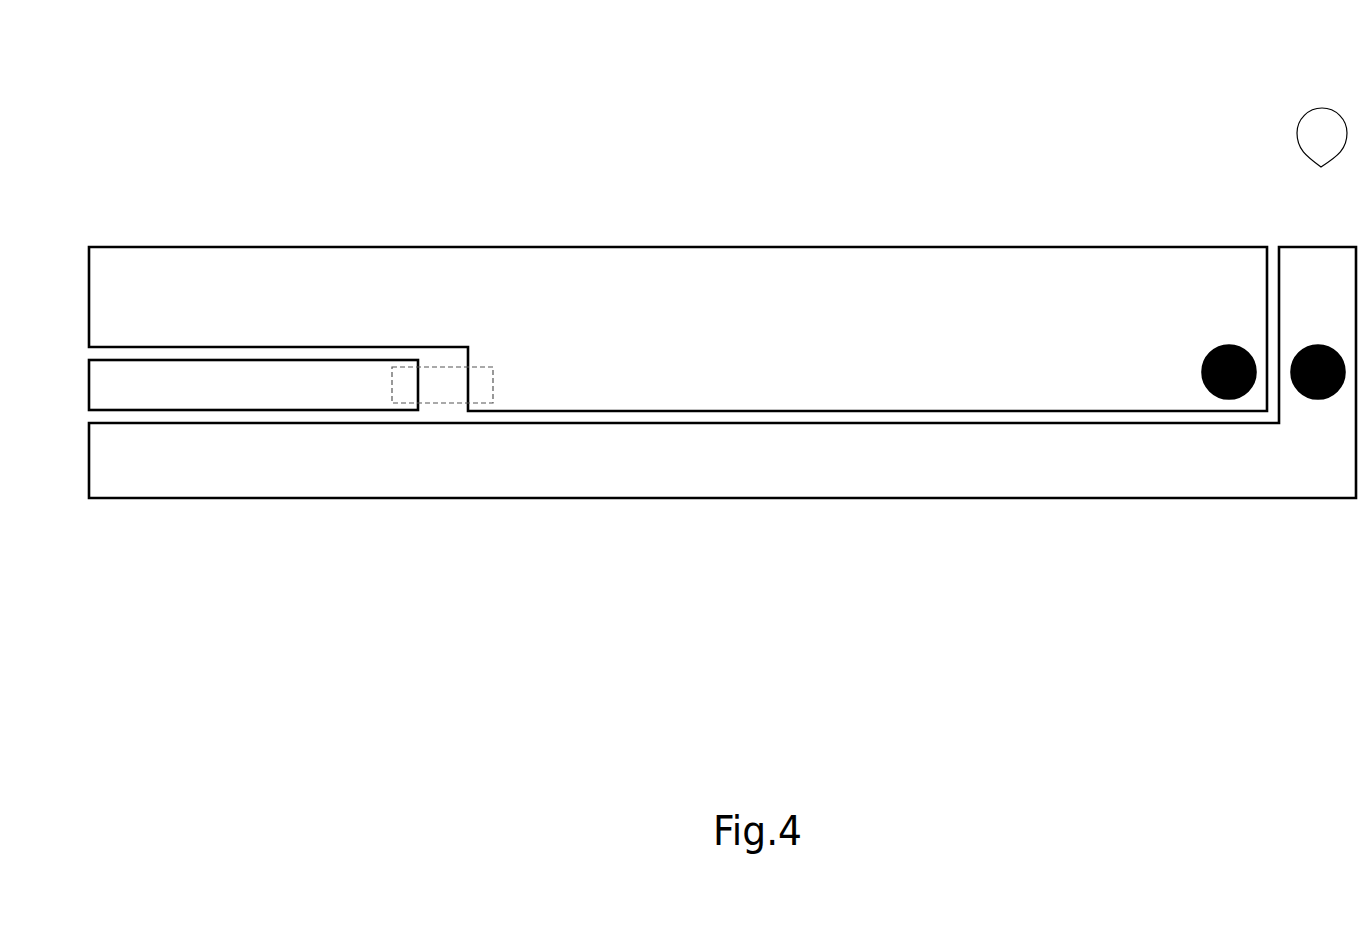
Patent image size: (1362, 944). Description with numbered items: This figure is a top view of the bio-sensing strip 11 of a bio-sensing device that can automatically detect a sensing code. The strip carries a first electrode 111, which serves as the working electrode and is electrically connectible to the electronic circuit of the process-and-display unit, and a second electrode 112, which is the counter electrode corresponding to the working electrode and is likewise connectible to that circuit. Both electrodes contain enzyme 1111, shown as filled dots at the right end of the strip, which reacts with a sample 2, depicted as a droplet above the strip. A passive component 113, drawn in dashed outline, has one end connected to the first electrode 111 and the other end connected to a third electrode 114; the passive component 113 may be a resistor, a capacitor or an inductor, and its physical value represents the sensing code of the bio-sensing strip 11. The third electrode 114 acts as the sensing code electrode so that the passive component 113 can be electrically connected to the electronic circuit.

The sample 2 is at (1298, 120).
The bio-sensing strip 11 is at (330, 238).
The first electrode 111 is at (860, 277).
The enzyme 1111 is at (1318, 398).
The second electrode 112 is at (960, 490).
The passive component 113 is at (437, 403).
The third electrode 114 is at (225, 398).